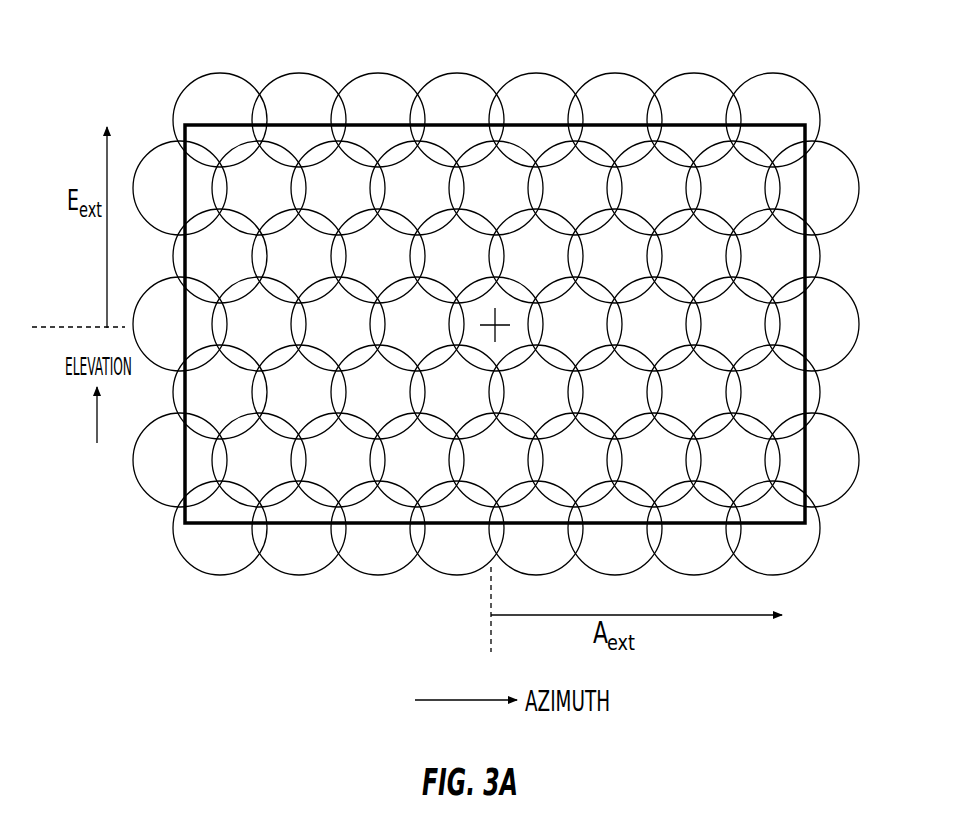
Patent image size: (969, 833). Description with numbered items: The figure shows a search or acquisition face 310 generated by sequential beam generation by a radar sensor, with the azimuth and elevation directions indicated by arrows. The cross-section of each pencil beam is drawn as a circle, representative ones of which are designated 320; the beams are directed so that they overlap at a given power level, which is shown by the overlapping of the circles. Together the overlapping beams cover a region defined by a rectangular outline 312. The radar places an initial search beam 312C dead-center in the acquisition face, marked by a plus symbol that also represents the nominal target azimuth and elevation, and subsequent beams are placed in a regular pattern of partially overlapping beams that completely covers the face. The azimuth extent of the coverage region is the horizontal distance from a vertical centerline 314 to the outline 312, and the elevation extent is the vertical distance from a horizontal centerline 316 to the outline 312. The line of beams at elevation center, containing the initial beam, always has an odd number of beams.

The search or acquisition face 310 is at (515, 327).
The rectangular outline 312 is at (533, 123).
The initial search beam 312C is at (566, 336).
The vertical centerline 314 is at (491, 592).
The horizontal centerline 316 is at (88, 327).
The pencil beam circles 320 is at (249, 78).